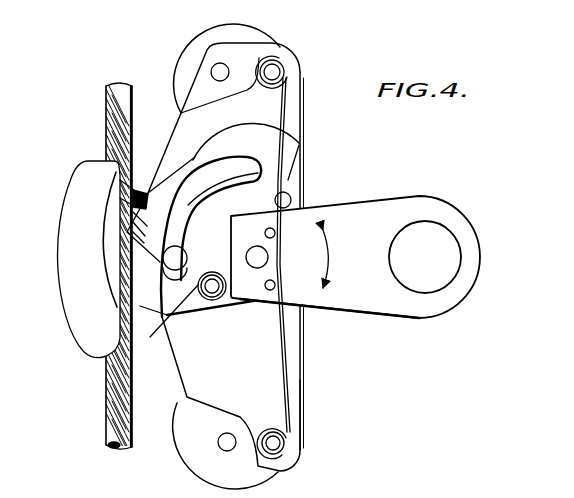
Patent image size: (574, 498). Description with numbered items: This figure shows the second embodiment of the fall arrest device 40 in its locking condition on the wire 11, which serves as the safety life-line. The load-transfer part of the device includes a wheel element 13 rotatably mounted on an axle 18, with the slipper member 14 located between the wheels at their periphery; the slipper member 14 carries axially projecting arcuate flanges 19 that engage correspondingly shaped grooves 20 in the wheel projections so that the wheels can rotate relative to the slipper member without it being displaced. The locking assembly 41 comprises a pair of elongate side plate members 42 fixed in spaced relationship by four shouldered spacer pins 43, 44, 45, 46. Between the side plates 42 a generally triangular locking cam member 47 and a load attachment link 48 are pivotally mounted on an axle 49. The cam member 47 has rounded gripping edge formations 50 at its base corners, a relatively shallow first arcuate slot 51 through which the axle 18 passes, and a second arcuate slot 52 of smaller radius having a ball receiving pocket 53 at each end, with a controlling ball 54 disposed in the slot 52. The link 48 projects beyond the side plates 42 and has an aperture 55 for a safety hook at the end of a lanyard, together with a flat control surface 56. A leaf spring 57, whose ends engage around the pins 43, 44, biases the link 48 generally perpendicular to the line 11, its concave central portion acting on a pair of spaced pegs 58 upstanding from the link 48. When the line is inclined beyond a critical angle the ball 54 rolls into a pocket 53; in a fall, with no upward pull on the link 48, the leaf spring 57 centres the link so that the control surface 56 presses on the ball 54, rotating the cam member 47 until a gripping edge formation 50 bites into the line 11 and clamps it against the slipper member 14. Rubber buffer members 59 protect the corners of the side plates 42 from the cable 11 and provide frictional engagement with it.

The wire 11 is at (107, 118).
The wheel element 13 is at (150, 192).
The slipper member 14 is at (80, 212).
The axle 18 is at (165, 262).
The arcuate flanges 19 is at (105, 258).
The grooves 20 is at (125, 192).
The fall arrest device 40 is at (410, 333).
The locking assembly 41 is at (100, 0).
The side plate members 42 is at (296, 397).
The shouldered spacer pin 43 is at (275, 78).
The shouldered spacer pin 44 is at (291, 448).
The shouldered spacer pin 45 is at (220, 63).
The shouldered spacer pin 46 is at (222, 446).
The locking cam member 47 is at (301, 145).
The load attachment link 48 is at (366, 305).
The axle 49 is at (256, 268).
The gripping edge formations 50 is at (268, 121).
The first arcuate slot 51 is at (196, 178).
The second arcuate slot 52 is at (264, 186).
The ball receiving pocket 53 is at (291, 197).
The controlling ball 54 is at (168, 322).
The aperture 55 is at (423, 221).
The flat control surface 56 is at (203, 203).
The leaf spring 57 is at (281, 330).
The pegs 58 is at (278, 278).
The rubber buffer members 59 is at (240, 33).